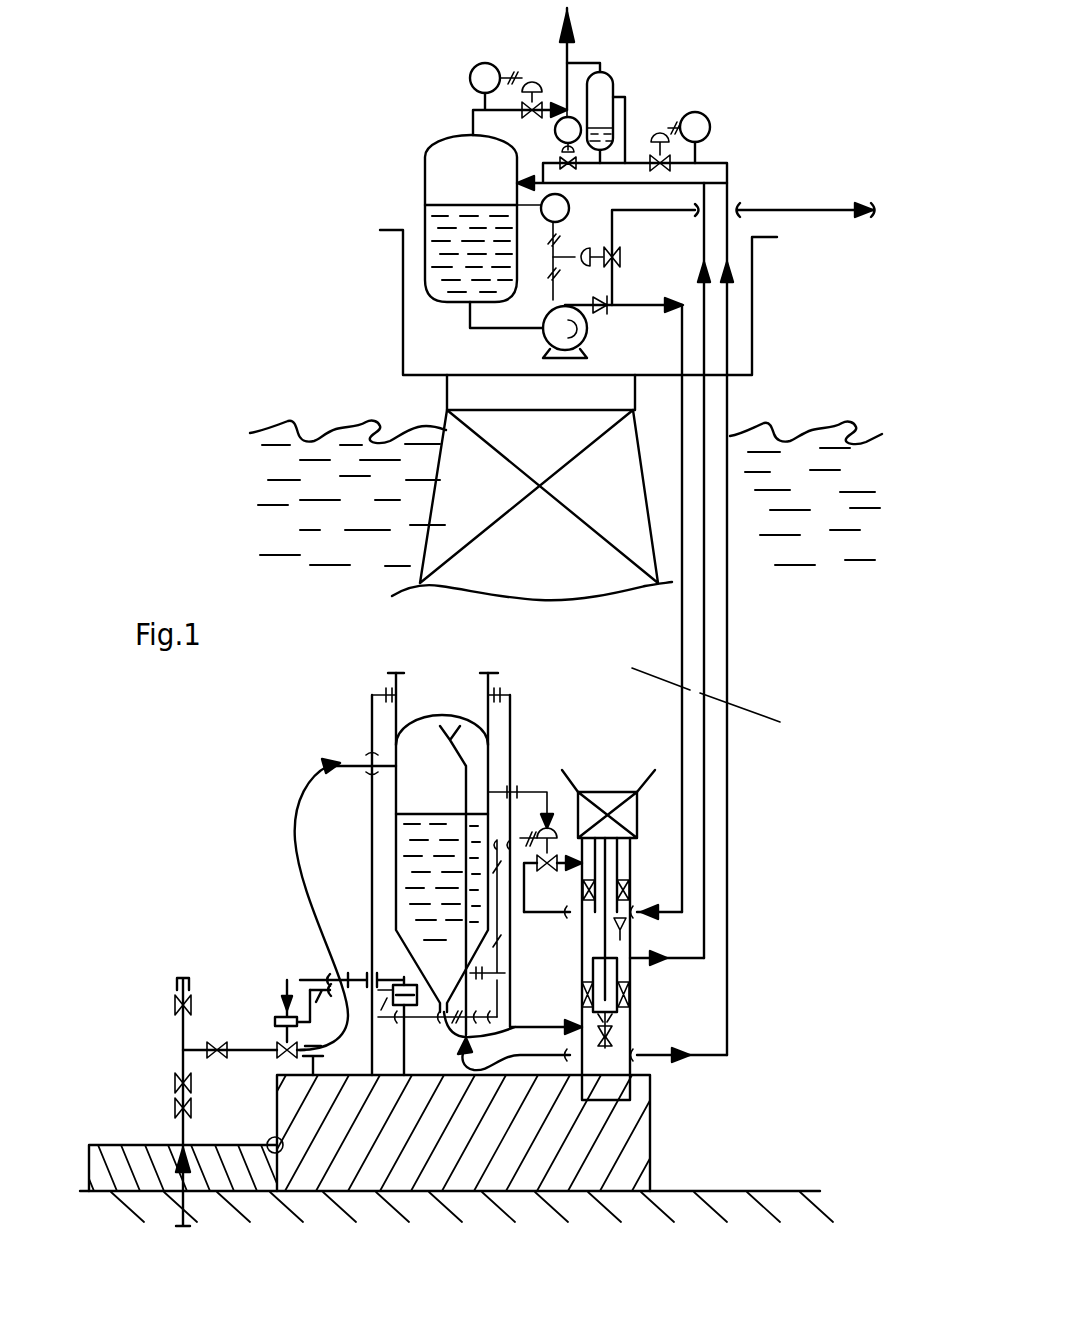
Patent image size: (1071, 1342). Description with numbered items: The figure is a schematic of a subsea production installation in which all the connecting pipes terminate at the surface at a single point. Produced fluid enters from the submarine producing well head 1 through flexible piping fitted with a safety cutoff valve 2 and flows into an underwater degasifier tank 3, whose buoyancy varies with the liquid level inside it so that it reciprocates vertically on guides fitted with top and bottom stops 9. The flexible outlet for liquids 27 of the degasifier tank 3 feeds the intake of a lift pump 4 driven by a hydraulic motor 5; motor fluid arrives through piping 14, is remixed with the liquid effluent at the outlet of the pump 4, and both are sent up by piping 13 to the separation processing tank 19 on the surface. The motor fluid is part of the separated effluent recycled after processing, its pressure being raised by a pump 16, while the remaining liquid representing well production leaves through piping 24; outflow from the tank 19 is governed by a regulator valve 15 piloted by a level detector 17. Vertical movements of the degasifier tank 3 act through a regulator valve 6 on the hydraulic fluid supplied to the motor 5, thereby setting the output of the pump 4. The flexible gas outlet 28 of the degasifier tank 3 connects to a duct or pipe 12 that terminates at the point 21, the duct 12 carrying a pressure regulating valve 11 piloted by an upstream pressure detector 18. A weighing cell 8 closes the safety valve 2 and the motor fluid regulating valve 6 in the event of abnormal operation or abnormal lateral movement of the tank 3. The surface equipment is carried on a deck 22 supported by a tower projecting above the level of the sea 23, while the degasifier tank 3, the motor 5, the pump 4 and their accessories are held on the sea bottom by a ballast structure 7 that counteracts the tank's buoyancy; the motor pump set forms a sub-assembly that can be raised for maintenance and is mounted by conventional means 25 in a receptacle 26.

The submarine producing well head 1 is at (180, 1050).
The safety cutoff valve 2 is at (275, 1024).
The degasifier tank 3 is at (396, 827).
The pump 4 is at (608, 977).
The hydraulic motor 5 is at (606, 863).
The regulator valve 6 is at (547, 854).
The ballast structure 7 is at (620, 1136).
The weighing cell 8 is at (403, 984).
The top and bottom stops 9 is at (395, 711).
The pressure regulating valve 11 is at (648, 158).
The duct or pipe 12 is at (730, 664).
The piping 13 is at (704, 618).
The piping 14 is at (683, 571).
The regulator valve 15 is at (618, 266).
The pump 16 is at (587, 330).
The level detector 17 is at (572, 199).
The upstream pressure detector 18 is at (712, 120).
The separation processing tank 19 is at (425, 181).
The gas pipe termination 21 is at (563, 33).
The deck 22 is at (403, 306).
The level of the sea 23 is at (336, 430).
The piping 24 is at (834, 208).
The conventional mounting means 25 is at (628, 818).
The receptacle 26 is at (631, 1023).
The outlet for liquids 27 is at (433, 1030).
The gas outlet 28 is at (445, 742).